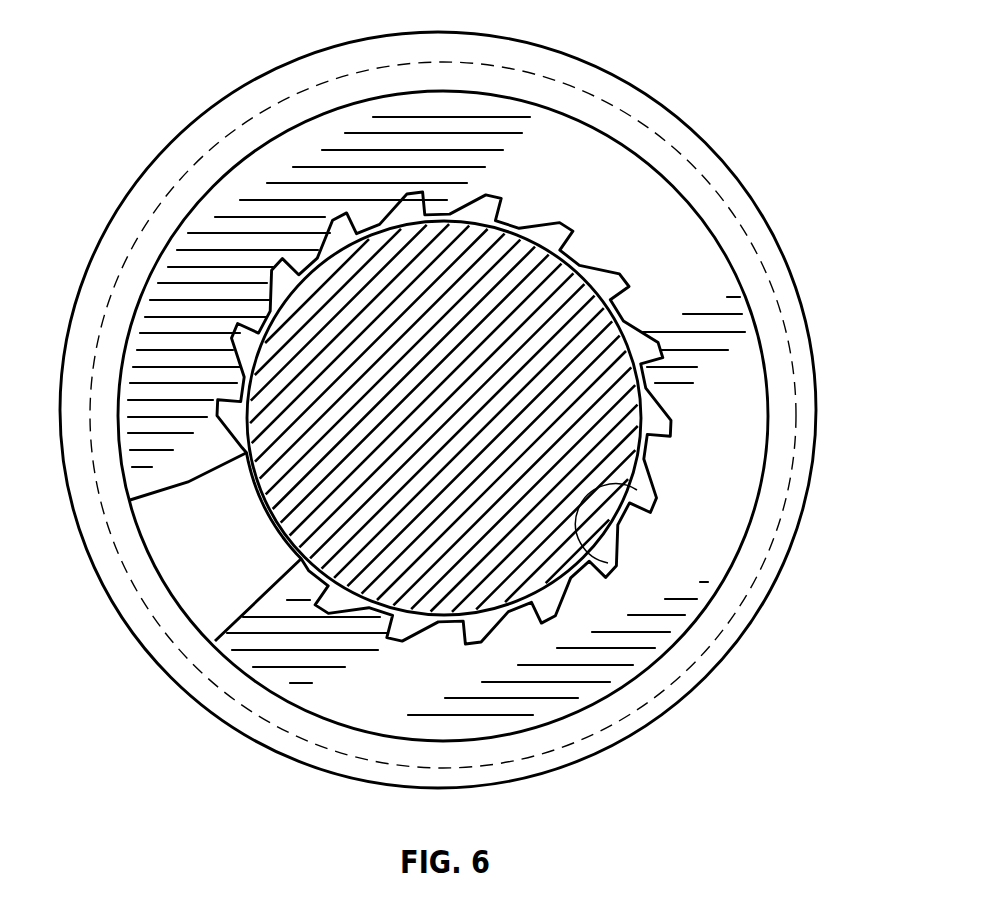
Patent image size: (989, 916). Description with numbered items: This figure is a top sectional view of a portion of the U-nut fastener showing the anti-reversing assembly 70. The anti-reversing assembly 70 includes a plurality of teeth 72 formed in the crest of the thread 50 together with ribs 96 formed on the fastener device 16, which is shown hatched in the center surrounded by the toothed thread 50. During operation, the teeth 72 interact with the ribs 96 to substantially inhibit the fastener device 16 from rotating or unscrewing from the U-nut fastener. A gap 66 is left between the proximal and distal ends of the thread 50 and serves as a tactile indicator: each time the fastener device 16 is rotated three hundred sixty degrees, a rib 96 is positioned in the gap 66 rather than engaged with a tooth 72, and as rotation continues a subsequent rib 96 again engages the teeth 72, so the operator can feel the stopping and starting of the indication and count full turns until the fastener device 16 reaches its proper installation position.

The fastener device 16 is at (536, 257).
The thread 50 is at (688, 300).
The gap 66 is at (201, 585).
The anti-reversing assembly 70 is at (648, 205).
The teeth 72 is at (655, 378).
The ribs 96 is at (608, 563).